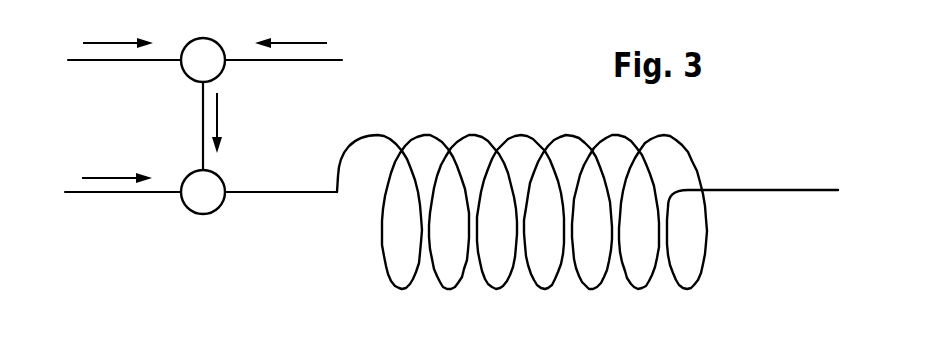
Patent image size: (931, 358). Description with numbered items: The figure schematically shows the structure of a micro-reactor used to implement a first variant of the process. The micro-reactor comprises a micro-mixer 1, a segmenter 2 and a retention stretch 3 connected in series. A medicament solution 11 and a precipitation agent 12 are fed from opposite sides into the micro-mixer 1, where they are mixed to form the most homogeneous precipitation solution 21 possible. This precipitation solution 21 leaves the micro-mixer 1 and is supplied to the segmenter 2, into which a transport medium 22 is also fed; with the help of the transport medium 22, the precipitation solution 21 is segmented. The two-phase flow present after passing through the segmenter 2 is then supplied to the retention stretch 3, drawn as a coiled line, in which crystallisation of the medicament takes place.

The micro-mixer 1 is at (195, 78).
The segmenter 2 is at (195, 208).
The retention stretch 3 is at (533, 278).
The medicament solution 11 is at (118, 32).
The precipitation agent 12 is at (291, 32).
The precipitation solution 21 is at (230, 123).
The transport medium 22 is at (117, 166).